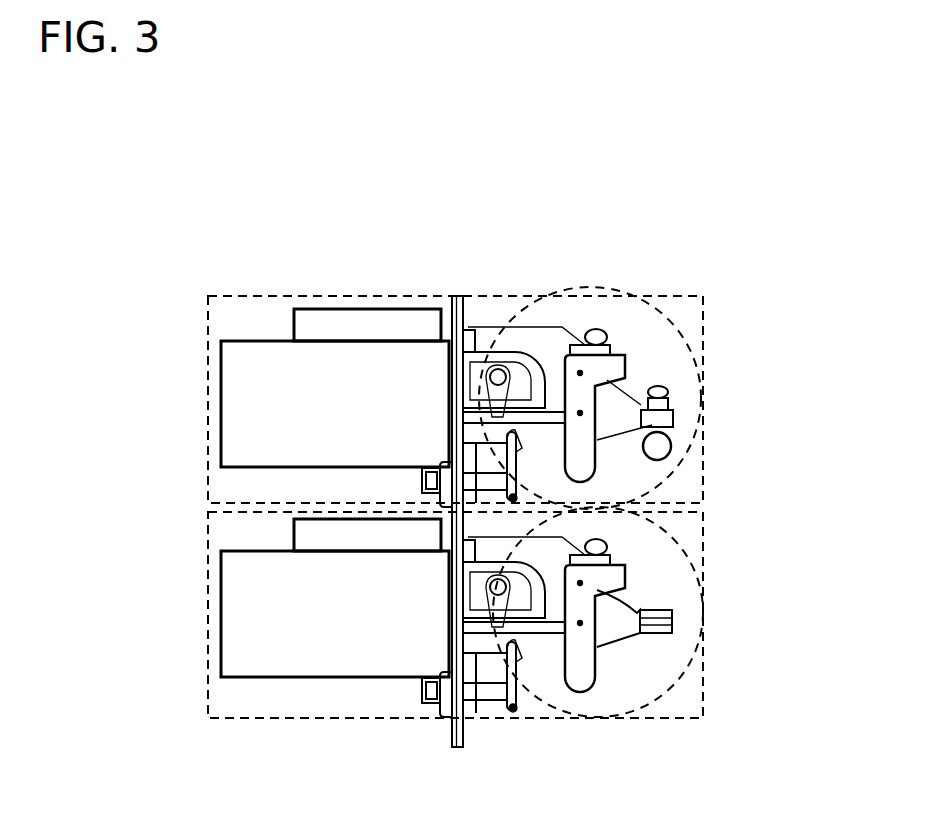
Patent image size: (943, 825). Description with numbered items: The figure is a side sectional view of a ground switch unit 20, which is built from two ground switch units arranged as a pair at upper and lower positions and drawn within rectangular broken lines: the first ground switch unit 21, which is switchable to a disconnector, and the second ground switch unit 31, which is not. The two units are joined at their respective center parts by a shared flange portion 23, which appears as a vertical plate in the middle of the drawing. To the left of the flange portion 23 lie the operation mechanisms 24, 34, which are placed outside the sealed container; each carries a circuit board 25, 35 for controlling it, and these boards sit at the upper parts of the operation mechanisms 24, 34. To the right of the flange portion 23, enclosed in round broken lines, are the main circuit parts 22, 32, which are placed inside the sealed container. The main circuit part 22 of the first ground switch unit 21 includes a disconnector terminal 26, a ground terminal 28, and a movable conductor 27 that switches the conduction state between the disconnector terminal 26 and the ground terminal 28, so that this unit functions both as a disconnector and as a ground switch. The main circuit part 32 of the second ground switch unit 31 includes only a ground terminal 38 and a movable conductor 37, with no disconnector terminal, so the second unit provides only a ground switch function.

The ground switch unit 20 is at (207, 171).
The first ground switch unit 21 is at (222, 296).
The main circuit part 22 is at (658, 316).
The flange portion 23 is at (463, 300).
The operation mechanism 24 is at (233, 430).
The circuit board 25 is at (388, 310).
The disconnector terminal 26 is at (662, 446).
The movable conductor 27 is at (592, 422).
The ground terminal 28 is at (518, 497).
The second ground switch unit 31 is at (260, 720).
The main circuit part 32 is at (672, 690).
The operation mechanism 34 is at (235, 622).
The circuit board 35 is at (296, 540).
The movable conductor 37 is at (597, 650).
The ground terminal 38 is at (517, 673).